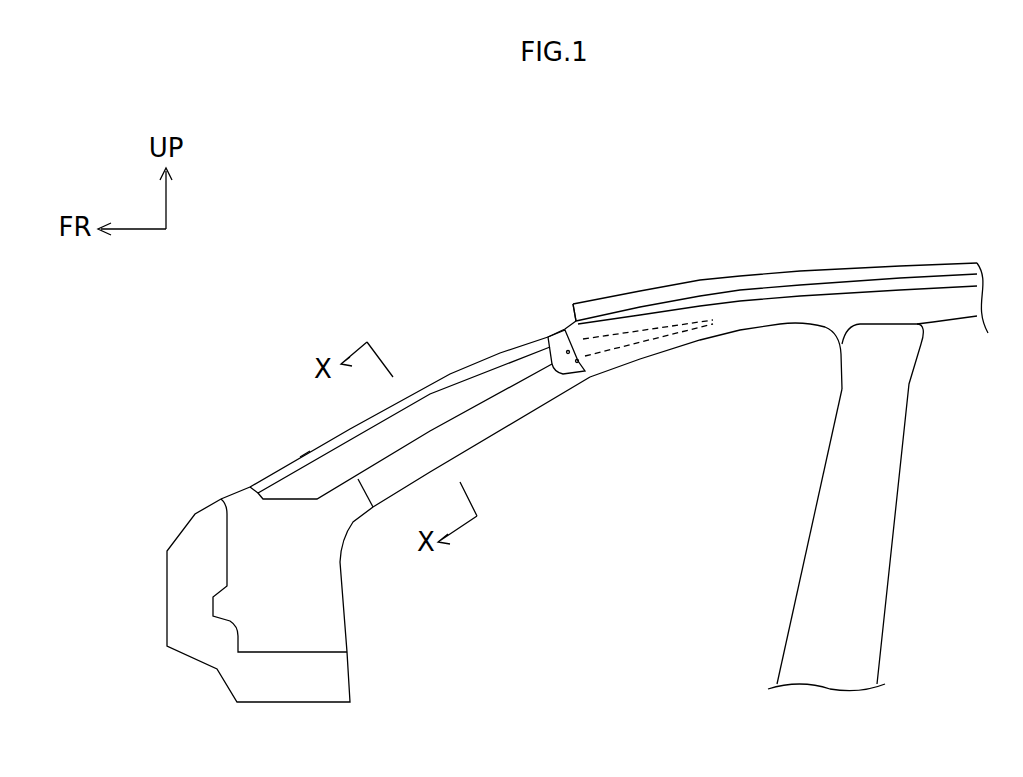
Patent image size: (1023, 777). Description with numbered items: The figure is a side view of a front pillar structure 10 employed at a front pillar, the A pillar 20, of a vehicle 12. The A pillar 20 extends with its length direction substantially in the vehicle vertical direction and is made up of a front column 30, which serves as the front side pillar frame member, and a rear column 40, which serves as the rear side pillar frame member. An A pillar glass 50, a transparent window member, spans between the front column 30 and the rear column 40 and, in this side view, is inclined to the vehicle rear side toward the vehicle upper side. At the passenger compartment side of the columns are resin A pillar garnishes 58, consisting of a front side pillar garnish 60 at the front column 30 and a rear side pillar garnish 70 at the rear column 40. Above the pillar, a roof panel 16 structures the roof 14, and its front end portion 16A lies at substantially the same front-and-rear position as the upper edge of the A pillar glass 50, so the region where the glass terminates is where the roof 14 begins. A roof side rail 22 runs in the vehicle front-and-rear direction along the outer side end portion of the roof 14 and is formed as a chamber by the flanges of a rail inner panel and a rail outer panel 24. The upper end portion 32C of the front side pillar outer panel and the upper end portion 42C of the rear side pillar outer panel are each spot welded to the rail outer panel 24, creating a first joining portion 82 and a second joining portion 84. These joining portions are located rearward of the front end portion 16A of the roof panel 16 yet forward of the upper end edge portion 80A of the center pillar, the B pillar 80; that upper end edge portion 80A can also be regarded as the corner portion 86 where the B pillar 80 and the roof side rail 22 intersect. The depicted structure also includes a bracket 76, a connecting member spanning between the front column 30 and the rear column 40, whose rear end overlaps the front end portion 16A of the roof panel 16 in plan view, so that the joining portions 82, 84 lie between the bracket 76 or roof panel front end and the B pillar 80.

The front pillar structure 10 is at (674, 382).
The vehicle 12 is at (815, 238).
The roof 14 is at (914, 260).
The roof panel 16 is at (600, 305).
The front end portion of the roof panel 16A is at (573, 315).
The front pillar 20 is at (298, 443).
The roof side rail 22 is at (780, 312).
The rail outer panel 24 is at (742, 322).
The front column 30 is at (634, 330).
The upper end portion of the front side pillar outer panel 32C is at (713, 323).
The rear column 40 is at (629, 365).
The upper end portion of the rear side pillar outer panel 42C is at (722, 335).
The A pillar glass 50 is at (290, 480).
The A pillar garnish 58 is at (420, 409).
The front side pillar garnish 60 is at (430, 382).
The rear side pillar garnish 70 is at (493, 435).
The bracket 76 is at (560, 366).
The center pillar 80 is at (905, 533).
The upper end edge portion of the center pillar 80A is at (838, 340).
The first joining portion 82 is at (697, 337).
The second joining portion 84 is at (697, 345).
The corner portion 86 is at (830, 344).